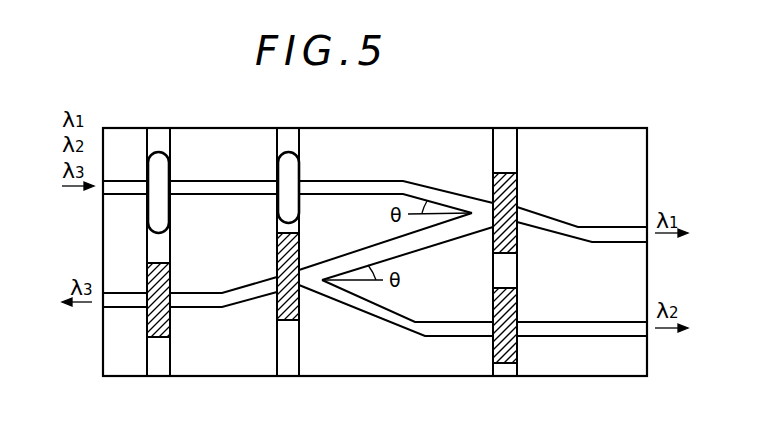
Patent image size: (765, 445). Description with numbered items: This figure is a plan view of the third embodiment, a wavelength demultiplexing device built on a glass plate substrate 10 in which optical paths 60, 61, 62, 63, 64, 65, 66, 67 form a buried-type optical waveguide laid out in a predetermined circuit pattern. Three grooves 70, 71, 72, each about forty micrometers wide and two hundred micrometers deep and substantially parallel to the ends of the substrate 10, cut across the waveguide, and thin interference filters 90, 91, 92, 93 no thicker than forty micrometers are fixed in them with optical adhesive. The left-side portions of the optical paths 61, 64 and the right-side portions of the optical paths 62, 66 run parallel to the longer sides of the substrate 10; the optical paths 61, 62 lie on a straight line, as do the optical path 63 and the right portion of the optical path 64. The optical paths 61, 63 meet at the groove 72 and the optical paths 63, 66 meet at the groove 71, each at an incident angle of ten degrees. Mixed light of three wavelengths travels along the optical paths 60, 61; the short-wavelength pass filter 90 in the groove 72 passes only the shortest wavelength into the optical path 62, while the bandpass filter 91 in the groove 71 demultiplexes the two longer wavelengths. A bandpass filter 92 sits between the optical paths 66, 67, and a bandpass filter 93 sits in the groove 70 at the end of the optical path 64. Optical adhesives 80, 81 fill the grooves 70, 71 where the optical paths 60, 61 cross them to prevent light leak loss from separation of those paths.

The glass plate substrate 10 is at (608, 137).
The optical path 60 is at (230, 180).
The optical path 61 is at (388, 178).
The optical path 62 is at (550, 215).
The optical path 63 is at (442, 240).
The optical path 64 is at (203, 310).
The optical path 65 is at (132, 309).
The optical path 66 is at (398, 327).
The optical path 67 is at (583, 338).
The groove 70 is at (158, 367).
The groove 71 is at (288, 365).
The groove 72 is at (507, 372).
The optical adhesive 80 is at (162, 180).
The optical adhesive 81 is at (295, 177).
The short-wavelength pass filter 90 is at (495, 197).
The bandpass filter 91 is at (278, 310).
The bandpass filter 92 is at (493, 343).
The bandpass filter 93 is at (148, 330).